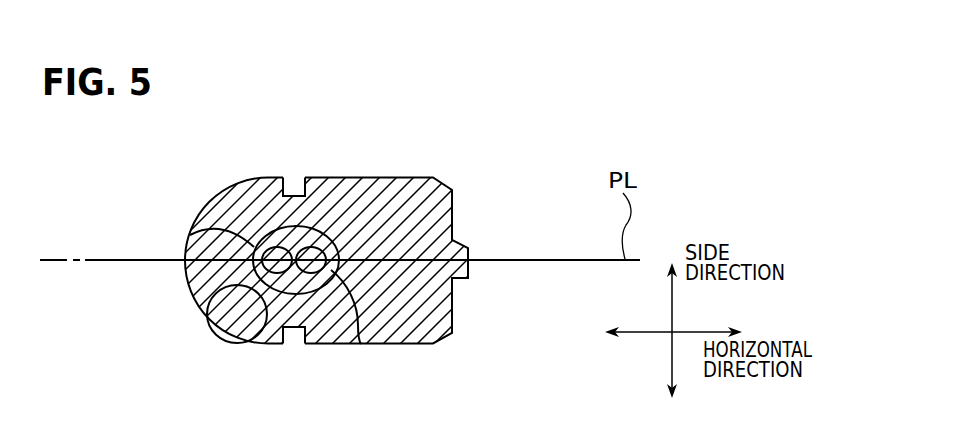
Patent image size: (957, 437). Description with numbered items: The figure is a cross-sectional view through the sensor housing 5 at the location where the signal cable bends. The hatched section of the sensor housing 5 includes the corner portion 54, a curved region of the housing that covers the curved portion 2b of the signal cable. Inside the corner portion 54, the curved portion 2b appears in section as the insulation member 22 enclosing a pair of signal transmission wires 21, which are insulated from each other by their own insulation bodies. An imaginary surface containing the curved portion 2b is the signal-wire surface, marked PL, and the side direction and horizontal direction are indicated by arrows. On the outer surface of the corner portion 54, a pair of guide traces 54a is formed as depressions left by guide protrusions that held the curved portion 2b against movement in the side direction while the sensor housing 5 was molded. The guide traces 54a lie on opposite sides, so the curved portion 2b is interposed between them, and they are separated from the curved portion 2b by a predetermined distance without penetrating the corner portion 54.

The sensor housing 5 is at (208, 203).
The corner portion 54 is at (388, 183).
The guide traces 54a is at (302, 180).
The signal transmission wires 21 is at (190, 234).
The insulation member 22 is at (252, 342).
The curved portion 2b is at (204, 312).